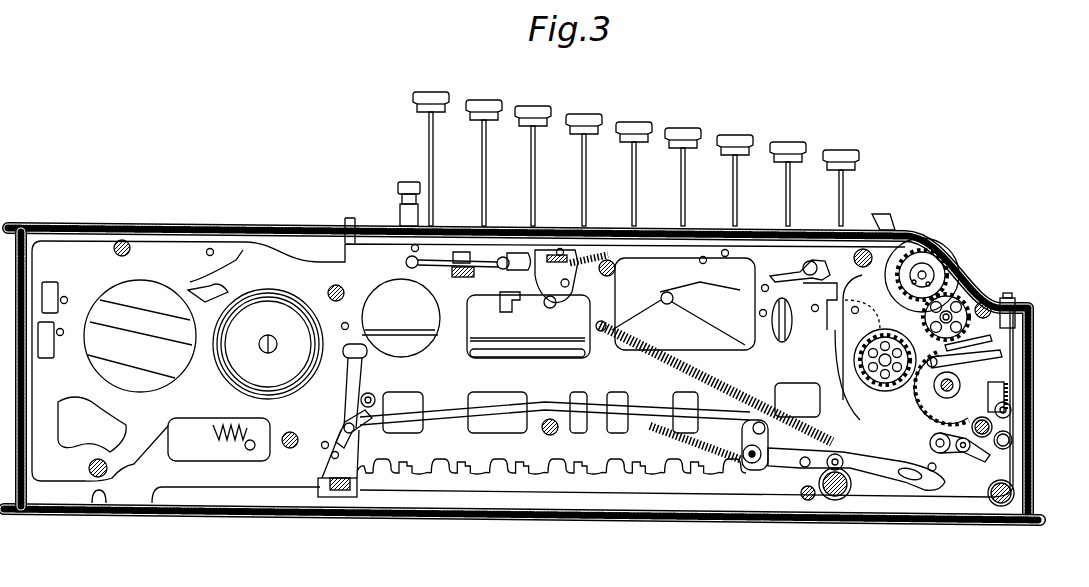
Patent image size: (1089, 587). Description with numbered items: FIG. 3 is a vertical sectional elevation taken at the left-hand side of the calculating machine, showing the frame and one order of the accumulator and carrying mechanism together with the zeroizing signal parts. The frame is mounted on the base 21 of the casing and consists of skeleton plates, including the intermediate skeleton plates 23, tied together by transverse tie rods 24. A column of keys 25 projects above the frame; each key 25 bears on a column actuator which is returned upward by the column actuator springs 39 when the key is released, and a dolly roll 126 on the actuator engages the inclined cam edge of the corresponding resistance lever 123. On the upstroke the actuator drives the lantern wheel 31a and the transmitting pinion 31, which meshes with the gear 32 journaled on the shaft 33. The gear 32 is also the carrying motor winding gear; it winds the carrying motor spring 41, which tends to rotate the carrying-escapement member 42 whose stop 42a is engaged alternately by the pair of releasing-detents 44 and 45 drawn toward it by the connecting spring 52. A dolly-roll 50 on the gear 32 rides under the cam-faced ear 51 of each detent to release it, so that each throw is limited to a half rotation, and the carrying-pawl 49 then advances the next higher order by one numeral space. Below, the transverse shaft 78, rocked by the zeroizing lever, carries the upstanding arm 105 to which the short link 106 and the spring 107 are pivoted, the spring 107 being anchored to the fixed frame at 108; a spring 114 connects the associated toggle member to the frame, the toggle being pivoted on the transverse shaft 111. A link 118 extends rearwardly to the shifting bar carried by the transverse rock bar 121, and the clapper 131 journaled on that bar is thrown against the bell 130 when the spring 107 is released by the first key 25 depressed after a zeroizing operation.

The base 21 is at (415, 520).
The intermediate skeleton plates 23 is at (576, 455).
The transverse tie rods 24 is at (99, 478).
The key 25 is at (642, 123).
The bell 130 is at (268, 310).
The clapper 131 is at (357, 374).
The transverse rock bar 121 is at (335, 497).
The resistance levers 123 is at (362, 430).
The dolly roll 126 is at (375, 398).
The link 118 is at (540, 404).
The spring 107 is at (720, 380).
The fixed frame connection point 108 is at (601, 334).
The spring 114 is at (680, 455).
The column actuator springs 39 is at (217, 437).
The dolly-roll 50 is at (1015, 328).
The transmitting pinion 31 is at (887, 292).
The lantern wheel 31a is at (865, 353).
The gear 32 is at (935, 390).
The shaft 33 is at (962, 385).
The carrying-pawl 49 is at (912, 377).
The carrying motor spring 41 is at (937, 387).
The transverse shaft 111 is at (751, 465).
The short link 106 is at (800, 468).
The transverse shaft 78 is at (835, 500).
The upstanding arm 105 is at (850, 470).
The cam-faced ear 51 is at (1010, 445).
The stop 42a is at (995, 338).
The releasing-detent 44 is at (1002, 355).
The connecting spring 52 is at (1008, 400).
The carrying-escapement member 42 is at (1012, 412).
The releasing-detent 45 is at (990, 457).